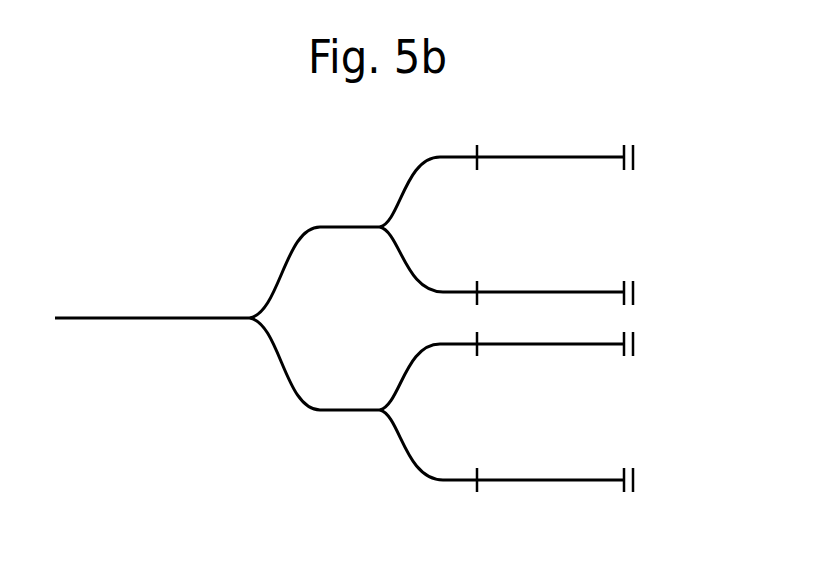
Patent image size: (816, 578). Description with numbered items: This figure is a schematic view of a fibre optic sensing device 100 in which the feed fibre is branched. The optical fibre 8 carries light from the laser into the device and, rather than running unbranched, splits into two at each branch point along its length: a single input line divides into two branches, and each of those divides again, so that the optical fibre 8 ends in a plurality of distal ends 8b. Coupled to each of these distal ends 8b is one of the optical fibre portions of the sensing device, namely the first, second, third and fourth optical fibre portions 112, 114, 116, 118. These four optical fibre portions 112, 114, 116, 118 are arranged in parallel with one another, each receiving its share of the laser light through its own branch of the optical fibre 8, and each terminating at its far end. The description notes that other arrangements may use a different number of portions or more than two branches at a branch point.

The fibre optic sensing device 100 is at (645, 130).
The optical fibre 8 is at (290, 258).
The distal ends 8b is at (479, 162).
The first optical fibre portion 112 is at (578, 152).
The second optical fibre portion 114 is at (584, 290).
The third optical fibre portion 116 is at (538, 347).
The fourth optical fibre portion 118 is at (586, 478).